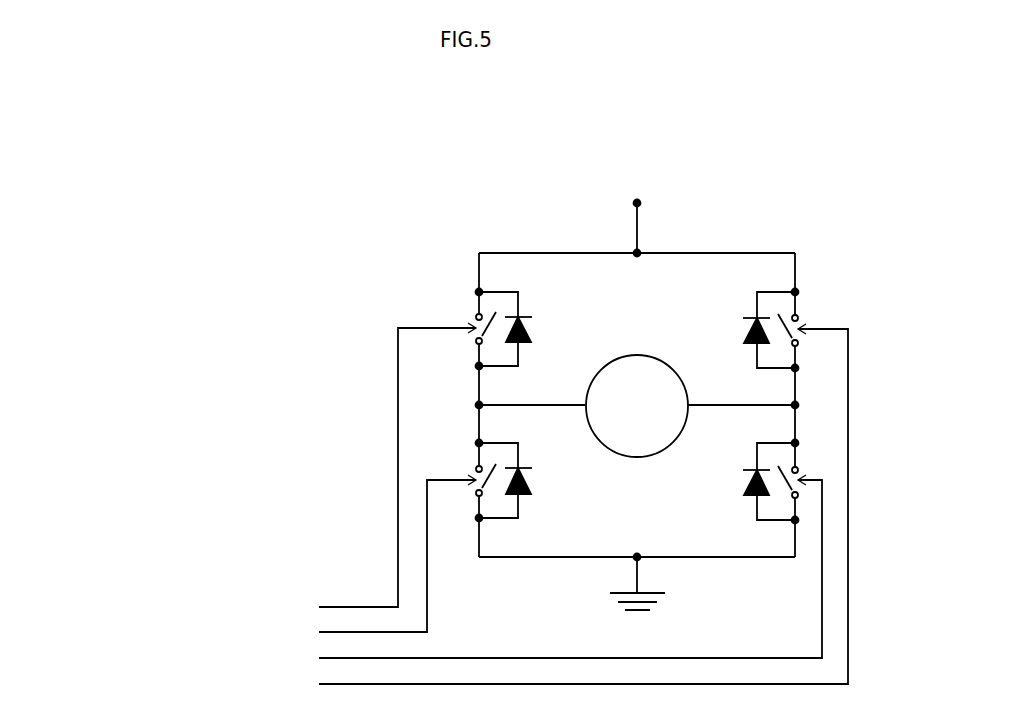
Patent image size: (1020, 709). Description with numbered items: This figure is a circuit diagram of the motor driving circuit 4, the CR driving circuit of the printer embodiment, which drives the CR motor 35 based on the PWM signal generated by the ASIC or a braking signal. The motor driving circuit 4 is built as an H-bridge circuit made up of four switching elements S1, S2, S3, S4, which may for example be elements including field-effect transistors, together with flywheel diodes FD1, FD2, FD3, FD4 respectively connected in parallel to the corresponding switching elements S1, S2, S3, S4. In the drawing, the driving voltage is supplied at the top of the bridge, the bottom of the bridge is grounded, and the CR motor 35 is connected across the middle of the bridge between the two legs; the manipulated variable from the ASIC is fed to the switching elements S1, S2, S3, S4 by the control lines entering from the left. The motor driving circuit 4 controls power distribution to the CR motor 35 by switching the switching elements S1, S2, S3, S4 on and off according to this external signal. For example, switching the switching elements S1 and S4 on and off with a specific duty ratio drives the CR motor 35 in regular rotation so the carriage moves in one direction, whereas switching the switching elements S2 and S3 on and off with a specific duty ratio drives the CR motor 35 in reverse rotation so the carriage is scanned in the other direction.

The motor driving circuit 4 is at (875, 208).
The CR motor 35 is at (638, 355).
The switching element S1 is at (468, 318).
The switching element S2 is at (468, 470).
The switching element S3 is at (807, 312).
The switching element S4 is at (810, 465).
The flywheel diode FD1 is at (532, 308).
The flywheel diode FD2 is at (538, 508).
The flywheel diode FD3 is at (743, 308).
The flywheel diode FD4 is at (737, 477).